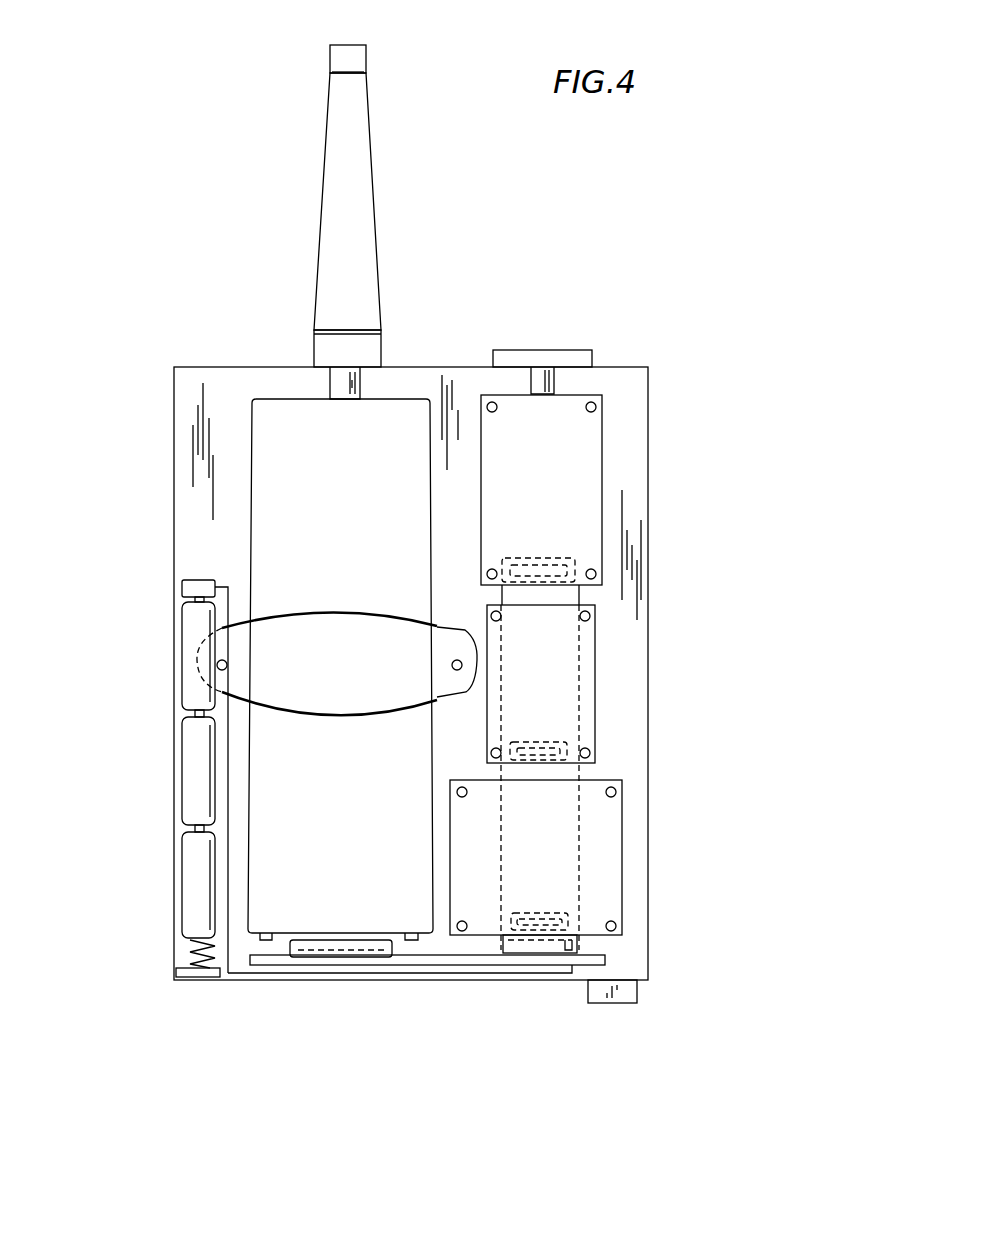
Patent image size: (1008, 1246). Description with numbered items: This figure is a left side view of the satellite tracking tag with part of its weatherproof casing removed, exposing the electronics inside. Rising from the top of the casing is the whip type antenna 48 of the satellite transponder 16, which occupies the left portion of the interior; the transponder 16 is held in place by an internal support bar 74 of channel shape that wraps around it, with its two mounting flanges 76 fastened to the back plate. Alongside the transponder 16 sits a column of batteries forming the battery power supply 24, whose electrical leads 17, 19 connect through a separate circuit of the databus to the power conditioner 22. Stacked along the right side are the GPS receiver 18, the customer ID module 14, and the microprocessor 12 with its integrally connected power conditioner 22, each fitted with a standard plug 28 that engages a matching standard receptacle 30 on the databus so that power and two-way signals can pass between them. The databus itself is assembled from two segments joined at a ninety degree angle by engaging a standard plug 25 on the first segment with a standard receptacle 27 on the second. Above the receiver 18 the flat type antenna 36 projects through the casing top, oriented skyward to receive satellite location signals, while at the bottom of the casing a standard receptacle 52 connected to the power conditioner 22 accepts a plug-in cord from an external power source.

The whip type antenna 48 is at (321, 197).
The satellite transponder 16 is at (250, 465).
The internal support bar 74 is at (342, 628).
The mounting flanges 76 is at (455, 636).
The battery power supply 24 is at (185, 880).
The electrical lead 17 is at (240, 963).
The electrical lead 19 is at (313, 973).
The standard plug 25 is at (605, 958).
The standard receptacle 27 is at (577, 940).
The standard plug 28 is at (575, 558).
The standard receptacle 30 is at (535, 560).
The flat type antenna 36 is at (592, 350).
The GPS receiver 18 is at (602, 445).
The customer ID module 14 is at (597, 668).
The microprocessor 12 is at (652, 857).
The power conditioner 22 is at (622, 822).
The standard receptacle 52 is at (637, 992).